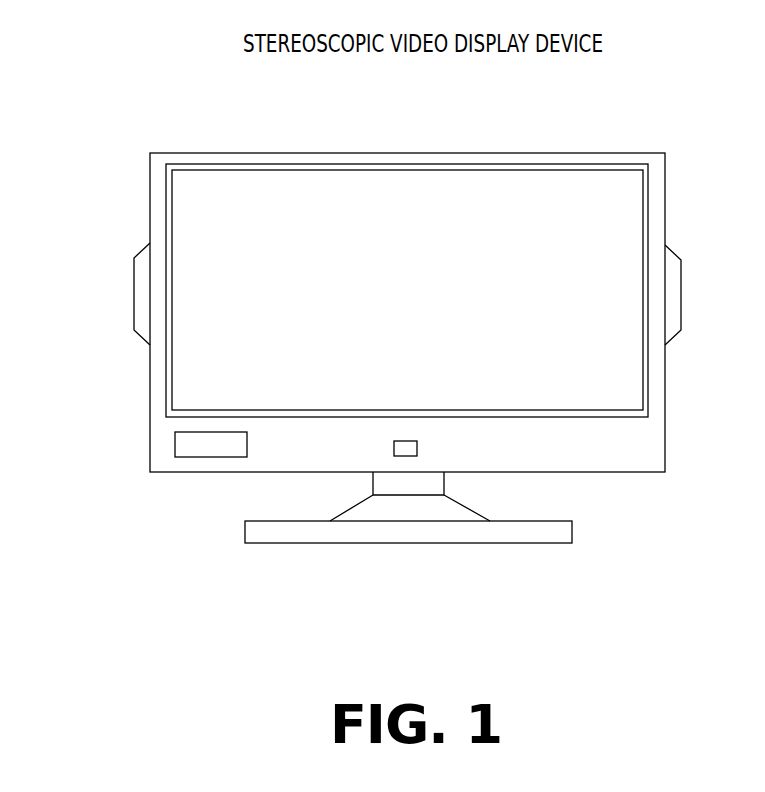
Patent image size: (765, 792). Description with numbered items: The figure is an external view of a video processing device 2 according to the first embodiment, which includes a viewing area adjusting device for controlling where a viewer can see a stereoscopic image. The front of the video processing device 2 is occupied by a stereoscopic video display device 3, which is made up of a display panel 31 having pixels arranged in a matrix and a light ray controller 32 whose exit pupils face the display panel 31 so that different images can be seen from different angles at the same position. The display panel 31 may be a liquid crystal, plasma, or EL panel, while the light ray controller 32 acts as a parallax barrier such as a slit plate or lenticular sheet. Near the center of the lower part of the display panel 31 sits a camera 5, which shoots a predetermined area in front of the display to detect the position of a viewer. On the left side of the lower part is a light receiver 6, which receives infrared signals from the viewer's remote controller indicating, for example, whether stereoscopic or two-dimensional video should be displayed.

The stereoscopic video display device 3 is at (347, 93).
The display panel 31 is at (352, 165).
The light ray controller 32 is at (444, 205).
The camera 5 is at (412, 449).
The light receiver 6 is at (197, 443).
The video processing device 2 is at (412, 601).